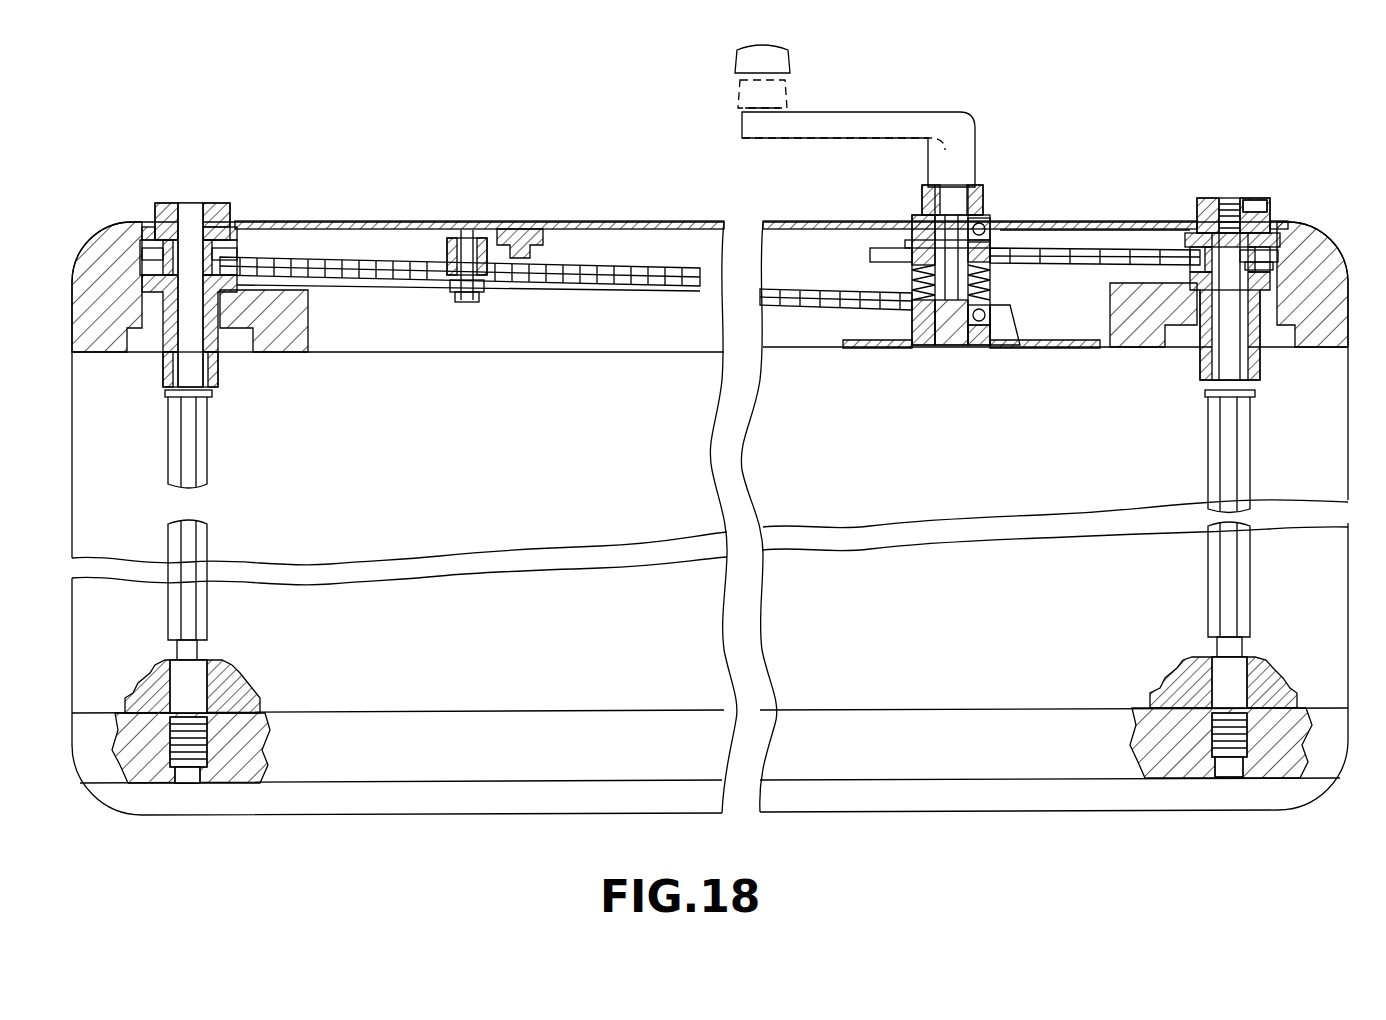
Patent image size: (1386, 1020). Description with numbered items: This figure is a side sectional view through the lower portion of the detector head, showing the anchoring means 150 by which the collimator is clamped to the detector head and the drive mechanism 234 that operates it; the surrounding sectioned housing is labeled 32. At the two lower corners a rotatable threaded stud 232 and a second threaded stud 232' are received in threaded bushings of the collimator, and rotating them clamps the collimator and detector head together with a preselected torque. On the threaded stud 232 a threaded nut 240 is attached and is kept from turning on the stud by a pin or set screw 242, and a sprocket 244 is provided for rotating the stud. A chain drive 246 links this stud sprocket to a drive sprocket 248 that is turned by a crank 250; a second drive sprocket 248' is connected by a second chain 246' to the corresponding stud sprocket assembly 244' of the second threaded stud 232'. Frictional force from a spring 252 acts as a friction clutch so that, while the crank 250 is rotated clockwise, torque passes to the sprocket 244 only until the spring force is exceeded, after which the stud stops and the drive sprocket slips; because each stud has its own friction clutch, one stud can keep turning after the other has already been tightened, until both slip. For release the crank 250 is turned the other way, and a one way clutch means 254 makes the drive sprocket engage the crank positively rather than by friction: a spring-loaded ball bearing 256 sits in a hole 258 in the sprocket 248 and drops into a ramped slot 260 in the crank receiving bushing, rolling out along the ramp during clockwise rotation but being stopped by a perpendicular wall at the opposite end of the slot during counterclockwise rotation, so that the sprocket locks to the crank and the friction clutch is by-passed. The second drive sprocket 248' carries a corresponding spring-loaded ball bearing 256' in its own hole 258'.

The container 32 is at (882, 486).
The anchoring means 150 is at (1130, 203).
The threaded stud 232 is at (1243, 741).
The second threaded stud 232' is at (219, 721).
The drive mechanism 234 is at (1252, 130).
The threaded nut 240 is at (1245, 205).
The pin or set screw 242 is at (1265, 212).
The sprocket 244 is at (1284, 246).
The stud sprocket assembly 244' is at (237, 449).
The chain drive 246 is at (1035, 278).
The second chain 246' is at (490, 285).
The drive sprocket 248 is at (912, 258).
The second drive sprocket 248' is at (1048, 360).
The crank 250 is at (850, 112).
The spring 252 is at (836, 318).
The one way clutch means 254 is at (868, 272).
The spring-loaded ball bearing 256 is at (1023, 198).
The spring-loaded ball bearing 256' is at (931, 346).
The hole 258 is at (1032, 221).
The hole 258' is at (996, 350).
The ramped slot 260 is at (985, 323).